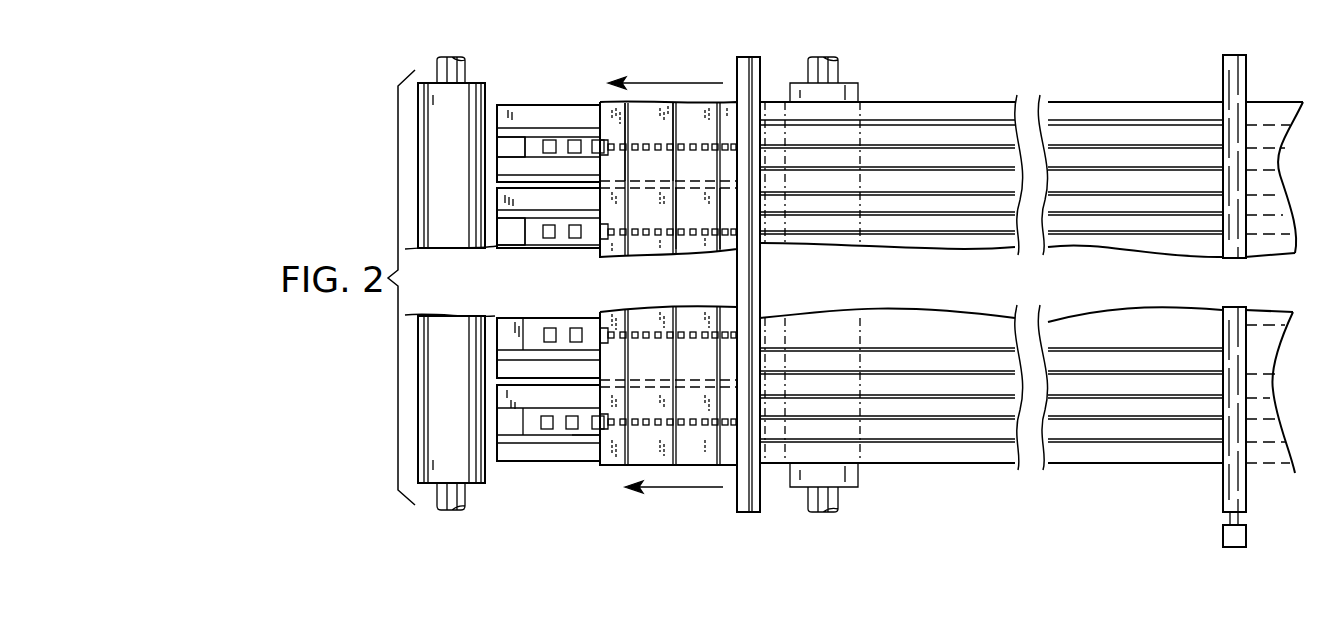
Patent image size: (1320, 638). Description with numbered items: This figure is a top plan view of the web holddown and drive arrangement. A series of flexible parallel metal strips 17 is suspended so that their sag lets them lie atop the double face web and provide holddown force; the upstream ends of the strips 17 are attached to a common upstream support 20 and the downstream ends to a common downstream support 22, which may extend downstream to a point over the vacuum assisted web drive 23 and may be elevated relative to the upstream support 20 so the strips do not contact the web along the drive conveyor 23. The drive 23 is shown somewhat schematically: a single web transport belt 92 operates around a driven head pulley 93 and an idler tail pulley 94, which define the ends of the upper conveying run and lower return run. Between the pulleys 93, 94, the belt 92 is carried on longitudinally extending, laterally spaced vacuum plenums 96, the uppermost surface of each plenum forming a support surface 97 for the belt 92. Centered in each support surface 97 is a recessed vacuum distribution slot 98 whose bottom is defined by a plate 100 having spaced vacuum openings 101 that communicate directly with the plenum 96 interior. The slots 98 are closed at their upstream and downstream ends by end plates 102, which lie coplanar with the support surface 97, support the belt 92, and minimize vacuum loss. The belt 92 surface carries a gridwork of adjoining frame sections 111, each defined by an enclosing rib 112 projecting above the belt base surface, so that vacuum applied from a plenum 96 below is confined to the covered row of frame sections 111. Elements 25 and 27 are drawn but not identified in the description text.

The flexible parallel metal strips 17 is at (1031, 299).
The upstream support 20 is at (1223, 85).
The downstream support 22 is at (750, 62).
The vacuum assisted web drive 23 is at (473, 174).
The tube wall 25 is at (877, 132).
The stop block 27 is at (1225, 538).
The web transport belt 92 is at (613, 257).
The driven head pulley 93 is at (476, 88).
The idler tail pulley 94 is at (802, 482).
The vacuum plenums 96 is at (503, 425).
The support surface 97 is at (573, 432).
The vacuum distribution slot 98 is at (585, 432).
The plate 100 is at (533, 145).
The vacuum openings 101 is at (573, 326).
The end plates 102 is at (505, 146).
The frame sections 111 is at (683, 122).
The enclosing rib 112 is at (728, 223).